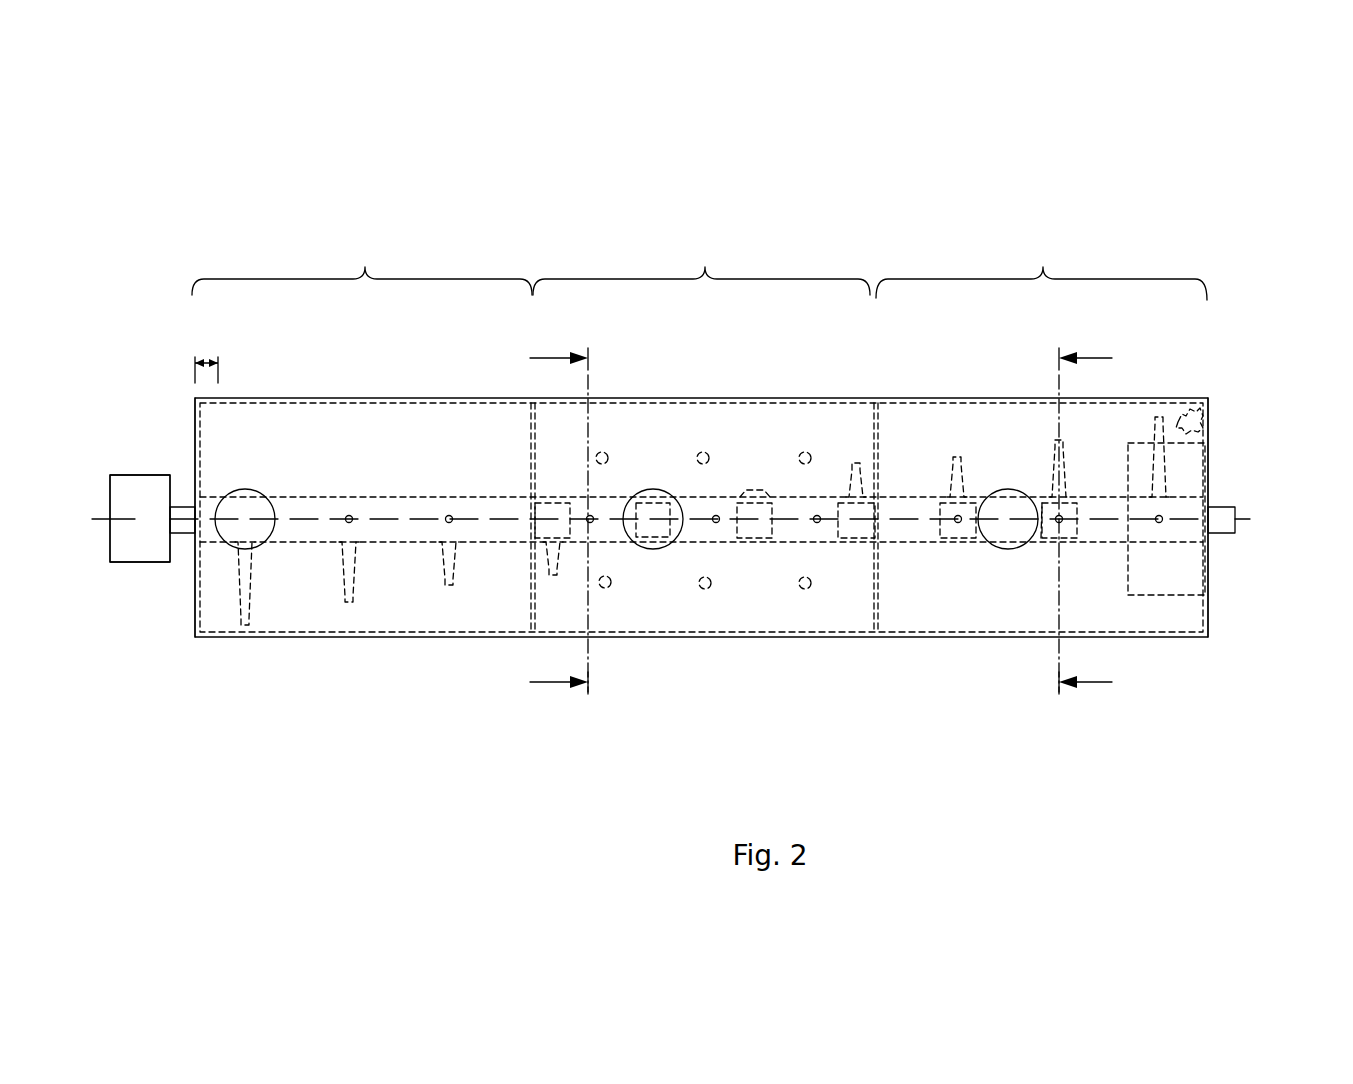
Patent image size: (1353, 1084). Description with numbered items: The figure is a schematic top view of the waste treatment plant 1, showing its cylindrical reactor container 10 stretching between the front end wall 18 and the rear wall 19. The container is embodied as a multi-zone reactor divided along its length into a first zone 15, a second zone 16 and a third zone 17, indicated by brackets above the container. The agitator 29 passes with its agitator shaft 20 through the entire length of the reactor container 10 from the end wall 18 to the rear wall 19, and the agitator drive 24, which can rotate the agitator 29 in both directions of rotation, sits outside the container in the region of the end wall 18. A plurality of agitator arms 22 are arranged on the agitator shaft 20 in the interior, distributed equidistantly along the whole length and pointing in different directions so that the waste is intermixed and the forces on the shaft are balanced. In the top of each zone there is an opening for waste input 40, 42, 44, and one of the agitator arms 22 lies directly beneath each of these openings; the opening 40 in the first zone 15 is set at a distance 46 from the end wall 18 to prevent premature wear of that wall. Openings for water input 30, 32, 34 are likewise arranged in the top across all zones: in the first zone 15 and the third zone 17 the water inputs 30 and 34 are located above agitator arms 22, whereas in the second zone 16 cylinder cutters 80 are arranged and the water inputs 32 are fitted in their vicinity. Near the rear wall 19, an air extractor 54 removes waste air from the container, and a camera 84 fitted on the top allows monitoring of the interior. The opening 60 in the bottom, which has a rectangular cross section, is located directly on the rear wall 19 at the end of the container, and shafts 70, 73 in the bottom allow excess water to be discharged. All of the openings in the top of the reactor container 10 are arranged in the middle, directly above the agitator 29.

The waste treatment plant 1 is at (1264, 286).
The reactor container 10 is at (1222, 468).
The first zone 15 is at (365, 265).
The second zone 16 is at (705, 265).
The third zone 17 is at (1043, 265).
The end wall 18 is at (193, 424).
The rear wall 19 is at (1212, 402).
The agitator shaft 20 is at (297, 497).
The agitator arms 22 is at (345, 578).
The agitator drive 24 is at (140, 548).
The agitator 29 is at (118, 452).
The opening for water input 30 is at (349, 515).
The opening for water input 32 is at (590, 515).
The opening for water input 34 is at (958, 545).
The opening for waste input 40 is at (245, 489).
The opening for waste input 42 is at (653, 489).
The opening for waste input 44 is at (1008, 489).
The distance 46 is at (204, 357).
The air extractor 54 is at (1159, 545).
The opening in the bottom 60 is at (1210, 575).
The shaft 70 is at (752, 545).
The shaft 73 is at (1080, 540).
The cylinder cutters 80 is at (597, 452).
The camera 84 is at (1192, 406).